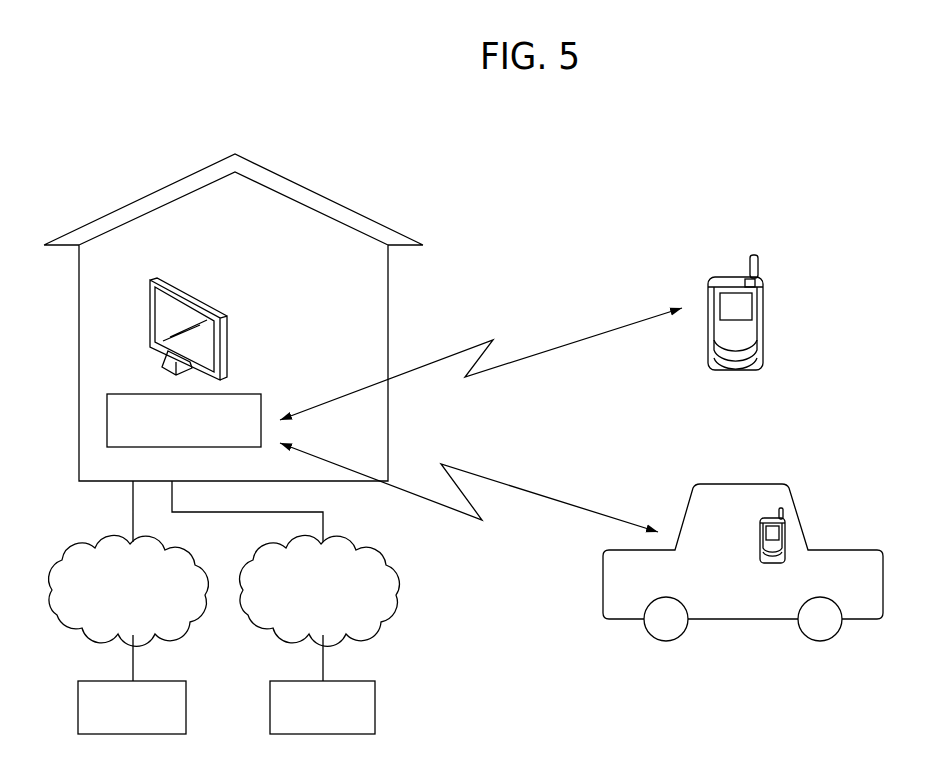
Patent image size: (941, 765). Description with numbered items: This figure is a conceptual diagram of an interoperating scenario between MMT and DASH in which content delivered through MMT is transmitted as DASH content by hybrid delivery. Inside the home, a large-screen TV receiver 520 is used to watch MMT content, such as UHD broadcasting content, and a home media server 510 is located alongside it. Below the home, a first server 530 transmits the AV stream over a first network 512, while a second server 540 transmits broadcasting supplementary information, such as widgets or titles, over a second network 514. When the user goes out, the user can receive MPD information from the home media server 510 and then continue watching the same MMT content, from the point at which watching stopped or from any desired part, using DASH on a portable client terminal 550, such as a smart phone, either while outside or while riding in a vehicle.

The home media server 510 is at (118, 393).
The TV receiver 520 is at (228, 337).
The first network 512 is at (61, 560).
The network 2 514 is at (248, 562).
The server 1 530 is at (86, 680).
The server 2 540 is at (278, 680).
The portable client terminal 550 is at (764, 320).